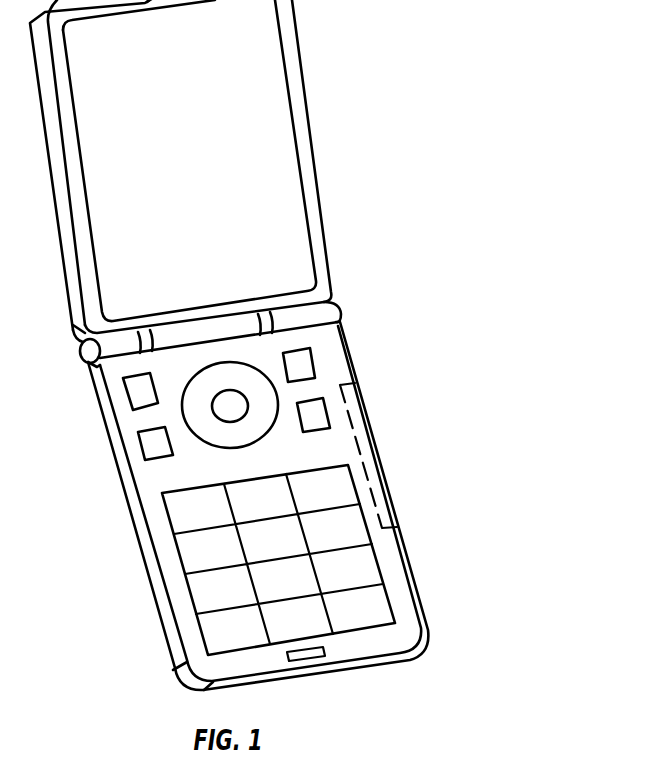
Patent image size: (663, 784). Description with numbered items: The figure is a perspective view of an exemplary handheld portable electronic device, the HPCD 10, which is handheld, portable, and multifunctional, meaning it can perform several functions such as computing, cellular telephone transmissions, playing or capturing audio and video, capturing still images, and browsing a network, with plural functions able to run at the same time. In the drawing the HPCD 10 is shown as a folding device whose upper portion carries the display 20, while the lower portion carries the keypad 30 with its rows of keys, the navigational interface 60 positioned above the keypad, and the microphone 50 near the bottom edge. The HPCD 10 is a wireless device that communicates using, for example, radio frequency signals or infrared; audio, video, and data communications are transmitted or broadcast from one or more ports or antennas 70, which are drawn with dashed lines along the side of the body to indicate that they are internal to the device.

The HPCD 10 is at (274, 354).
The display 20 is at (175, 163).
The keypad 30 is at (282, 515).
The microphone 50 is at (310, 660).
The navigational interface 60 is at (287, 395).
The antennas 70 is at (368, 460).